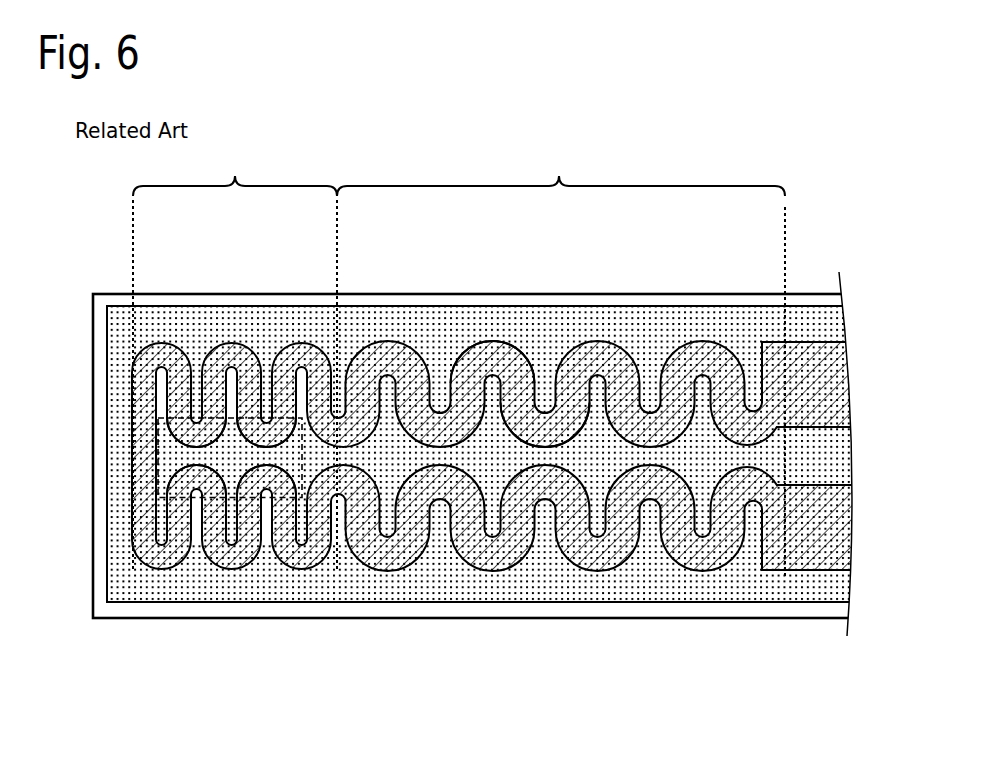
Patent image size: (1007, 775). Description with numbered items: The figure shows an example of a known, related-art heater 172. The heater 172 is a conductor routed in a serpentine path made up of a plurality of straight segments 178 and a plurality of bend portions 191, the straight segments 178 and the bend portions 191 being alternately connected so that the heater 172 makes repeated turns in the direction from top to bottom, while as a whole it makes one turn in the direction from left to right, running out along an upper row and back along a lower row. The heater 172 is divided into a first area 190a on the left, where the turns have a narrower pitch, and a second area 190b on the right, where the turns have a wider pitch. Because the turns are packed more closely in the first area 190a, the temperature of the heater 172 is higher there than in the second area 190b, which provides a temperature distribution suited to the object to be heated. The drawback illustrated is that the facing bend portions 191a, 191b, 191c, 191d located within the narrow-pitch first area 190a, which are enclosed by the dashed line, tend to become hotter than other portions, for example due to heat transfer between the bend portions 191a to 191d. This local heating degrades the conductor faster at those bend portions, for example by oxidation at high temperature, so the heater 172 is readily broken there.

The heater 172 is at (757, 150).
The straight segments 178 is at (414, 400).
The first area 190a is at (235, 360).
The second area 190b is at (561, 364).
The bend portions 191 is at (541, 421).
The bend portion 191a is at (200, 428).
The bend portion 191b is at (270, 428).
The bend portion 191c is at (197, 480).
The bend portion 191d is at (267, 480).